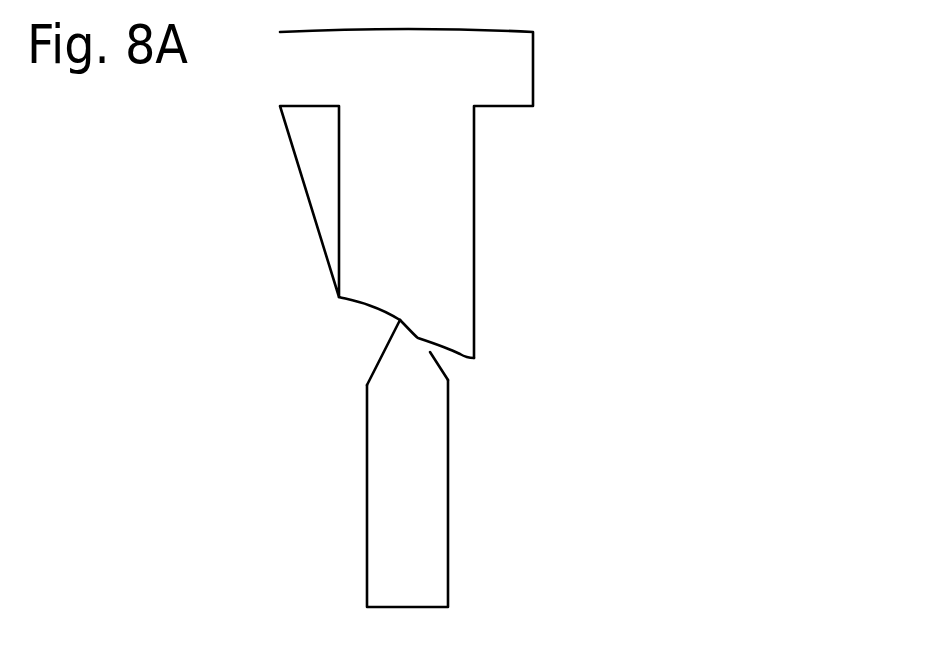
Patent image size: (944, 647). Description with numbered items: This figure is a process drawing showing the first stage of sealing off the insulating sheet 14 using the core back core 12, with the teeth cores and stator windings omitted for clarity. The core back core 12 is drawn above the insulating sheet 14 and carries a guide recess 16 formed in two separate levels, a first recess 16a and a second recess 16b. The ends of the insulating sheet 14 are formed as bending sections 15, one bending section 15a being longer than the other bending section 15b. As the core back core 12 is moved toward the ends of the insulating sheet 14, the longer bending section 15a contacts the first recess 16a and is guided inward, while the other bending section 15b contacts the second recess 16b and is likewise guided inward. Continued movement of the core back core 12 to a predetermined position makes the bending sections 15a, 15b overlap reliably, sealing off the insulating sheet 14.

The core back core 12 is at (594, 68).
The insulating sheet 14 is at (457, 562).
The bending sections 15 is at (404, 397).
The bending section 15a is at (380, 362).
The bending section 15b is at (445, 373).
The guide recess 16 is at (408, 357).
The first recess 16a is at (370, 305).
The second recess 16b is at (464, 357).